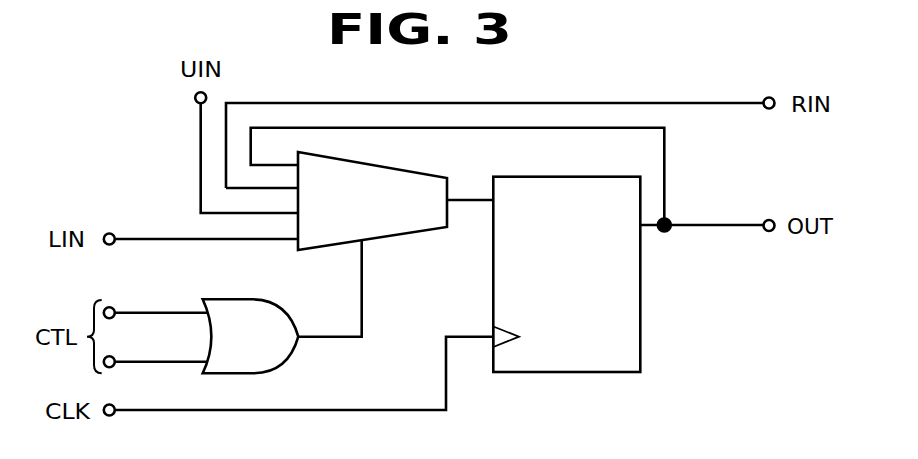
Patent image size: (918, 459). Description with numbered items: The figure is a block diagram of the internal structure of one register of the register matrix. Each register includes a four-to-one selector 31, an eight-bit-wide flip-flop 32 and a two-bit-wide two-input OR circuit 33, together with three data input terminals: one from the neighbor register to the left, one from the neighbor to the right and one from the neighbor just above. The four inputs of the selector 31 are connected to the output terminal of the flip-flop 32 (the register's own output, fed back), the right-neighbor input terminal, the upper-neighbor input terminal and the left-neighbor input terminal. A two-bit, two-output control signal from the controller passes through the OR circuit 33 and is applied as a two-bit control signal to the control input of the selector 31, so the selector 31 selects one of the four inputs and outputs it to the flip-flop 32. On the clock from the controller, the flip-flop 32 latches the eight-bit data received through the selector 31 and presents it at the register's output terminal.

The 4–1 selector 31 is at (360, 163).
The flip-flop 32 is at (642, 308).
The two-input OR circuit 33 is at (228, 300).